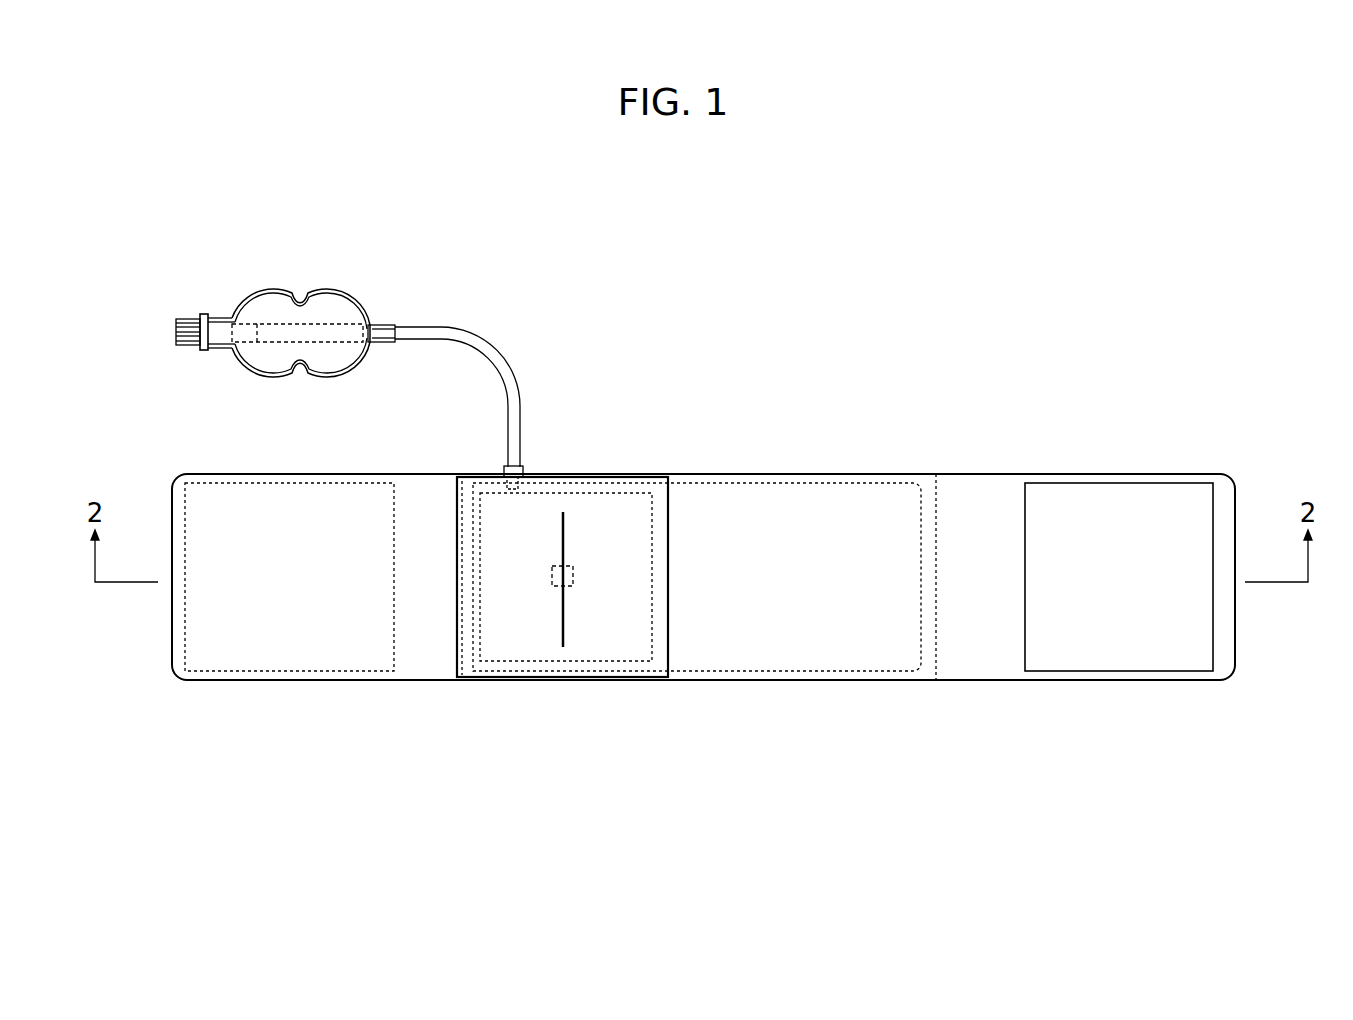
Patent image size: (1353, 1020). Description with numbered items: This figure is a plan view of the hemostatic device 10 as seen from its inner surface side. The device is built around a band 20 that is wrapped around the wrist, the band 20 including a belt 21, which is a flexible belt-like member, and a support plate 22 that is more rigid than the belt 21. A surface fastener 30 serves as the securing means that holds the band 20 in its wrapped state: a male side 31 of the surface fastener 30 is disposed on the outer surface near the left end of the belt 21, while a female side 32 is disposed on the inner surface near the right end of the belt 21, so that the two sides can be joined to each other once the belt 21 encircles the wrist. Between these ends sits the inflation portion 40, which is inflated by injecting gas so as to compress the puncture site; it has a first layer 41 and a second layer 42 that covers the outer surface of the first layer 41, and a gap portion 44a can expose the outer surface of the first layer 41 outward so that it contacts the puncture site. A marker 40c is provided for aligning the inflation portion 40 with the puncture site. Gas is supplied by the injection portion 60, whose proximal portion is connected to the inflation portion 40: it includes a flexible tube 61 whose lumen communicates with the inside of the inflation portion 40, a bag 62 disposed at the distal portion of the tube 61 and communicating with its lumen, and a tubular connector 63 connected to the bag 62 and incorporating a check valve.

The hemostatic device 10 is at (110, 134).
The band 20 is at (704, 512).
The belt 21 is at (915, 390).
The support plate 22 is at (892, 483).
The surface fastener 30 is at (220, 681).
The male side 31 is at (290, 672).
The female side 32 is at (1127, 673).
The inflation portion 40 is at (579, 588).
The marker 40c is at (574, 578).
The first layer 41 is at (612, 662).
The second layer 42 is at (457, 647).
The gap portion 44a is at (562, 628).
The injection portion 60 is at (332, 333).
The tube 61 is at (433, 327).
The bag 62 is at (348, 291).
The connector 63 is at (185, 320).